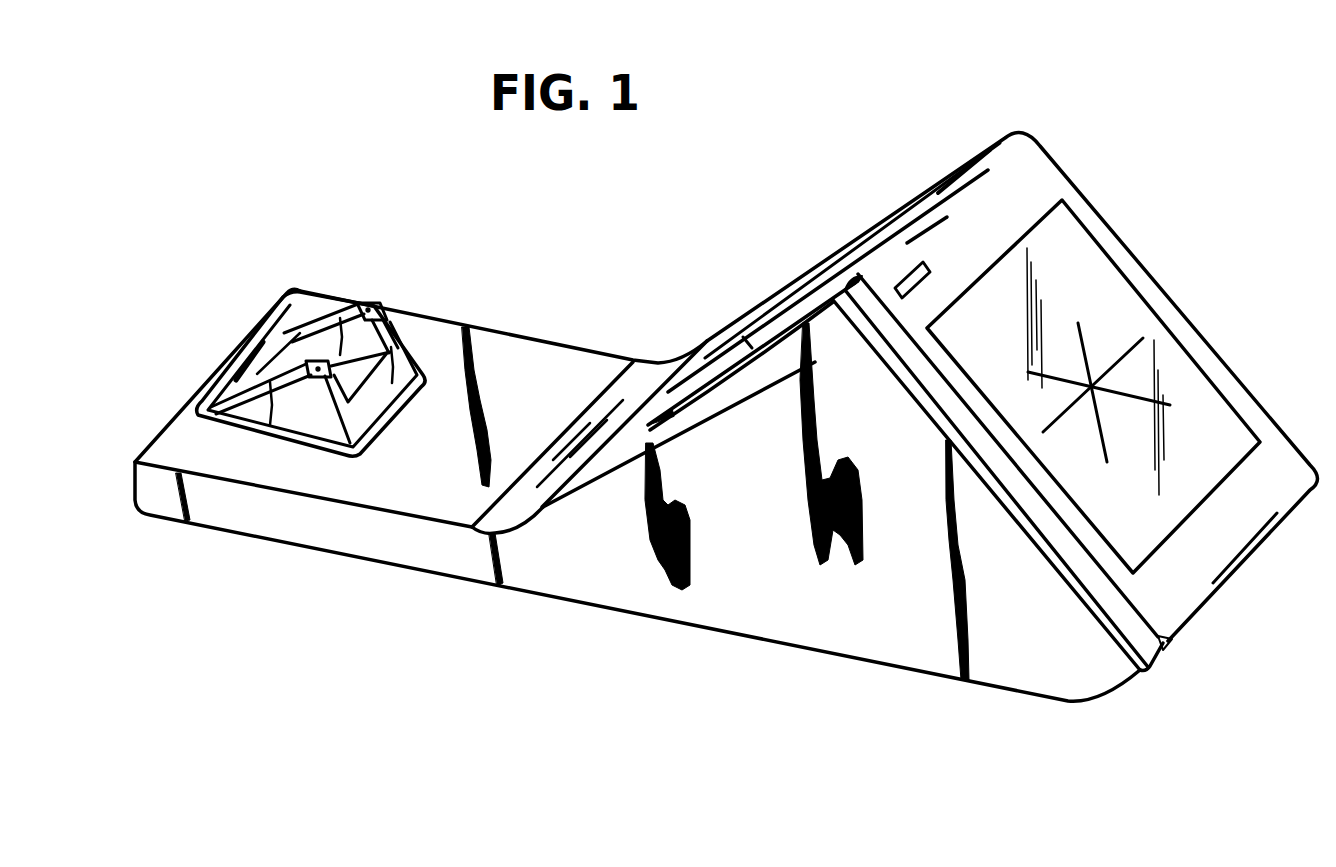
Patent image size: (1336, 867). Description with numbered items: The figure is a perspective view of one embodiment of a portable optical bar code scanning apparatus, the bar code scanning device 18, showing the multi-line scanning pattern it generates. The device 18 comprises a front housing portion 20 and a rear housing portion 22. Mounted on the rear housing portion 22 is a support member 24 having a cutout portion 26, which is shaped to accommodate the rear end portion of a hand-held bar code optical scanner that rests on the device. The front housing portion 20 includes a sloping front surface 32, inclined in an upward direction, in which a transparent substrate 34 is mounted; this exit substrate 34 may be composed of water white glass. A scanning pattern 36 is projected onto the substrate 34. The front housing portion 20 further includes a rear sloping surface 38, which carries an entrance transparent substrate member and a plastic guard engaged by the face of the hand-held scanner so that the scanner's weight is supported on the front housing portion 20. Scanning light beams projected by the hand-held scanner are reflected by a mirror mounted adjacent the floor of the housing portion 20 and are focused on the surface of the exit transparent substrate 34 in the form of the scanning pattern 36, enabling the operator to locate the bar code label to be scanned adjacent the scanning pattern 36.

The bar code scanning device 18 is at (575, 656).
The front housing portion 20 is at (1043, 143).
The rear housing portion 22 is at (505, 331).
The support member 24 is at (372, 308).
The cutout portion 26 is at (317, 378).
The sloping front surface 32 is at (1055, 185).
The transparent substrate 34 is at (1180, 354).
The scanning pattern 36 is at (1088, 350).
The rear sloping surface 38 is at (936, 194).